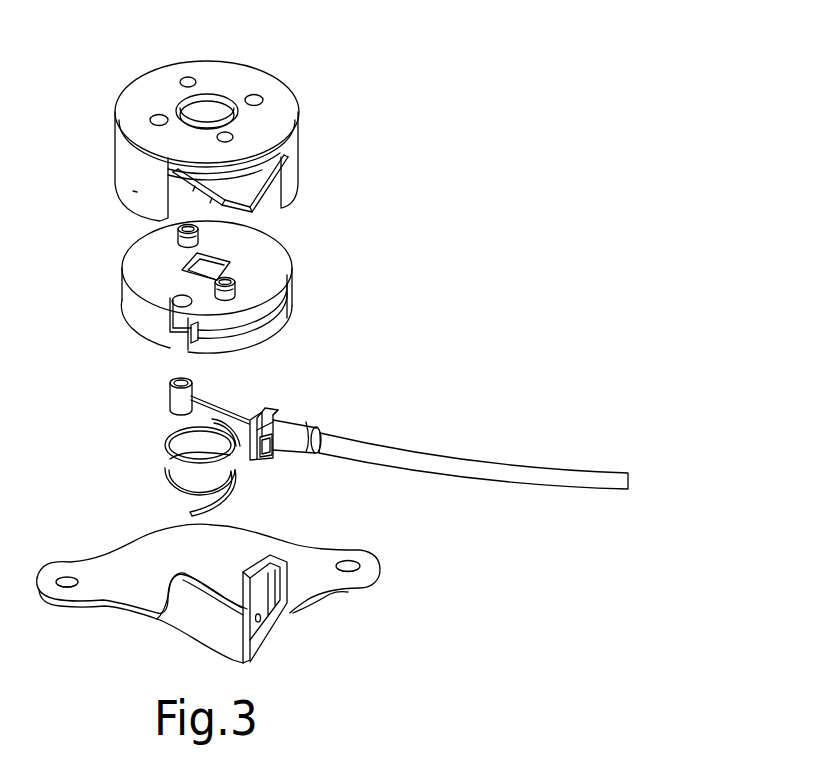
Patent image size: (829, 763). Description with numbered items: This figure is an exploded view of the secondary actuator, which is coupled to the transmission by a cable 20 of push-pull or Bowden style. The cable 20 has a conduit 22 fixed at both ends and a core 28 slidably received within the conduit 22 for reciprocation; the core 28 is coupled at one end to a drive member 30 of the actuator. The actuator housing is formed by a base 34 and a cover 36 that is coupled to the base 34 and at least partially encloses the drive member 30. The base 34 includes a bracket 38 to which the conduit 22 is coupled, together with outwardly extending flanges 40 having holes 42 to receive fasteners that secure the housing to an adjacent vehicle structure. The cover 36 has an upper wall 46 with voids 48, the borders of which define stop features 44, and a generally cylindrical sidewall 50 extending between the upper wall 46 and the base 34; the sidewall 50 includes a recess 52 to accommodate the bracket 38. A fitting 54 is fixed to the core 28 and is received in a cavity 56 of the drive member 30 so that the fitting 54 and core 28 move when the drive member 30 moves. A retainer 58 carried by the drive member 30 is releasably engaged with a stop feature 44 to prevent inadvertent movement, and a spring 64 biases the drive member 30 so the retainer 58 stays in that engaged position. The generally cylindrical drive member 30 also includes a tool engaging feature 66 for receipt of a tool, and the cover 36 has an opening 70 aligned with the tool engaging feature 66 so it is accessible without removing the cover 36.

The cable 20 is at (439, 454).
The conduit 22 is at (419, 463).
The core 28 is at (206, 405).
The drive member 30 is at (209, 276).
The base 34 is at (226, 600).
The cover 36 is at (220, 125).
The bracket 38 is at (280, 598).
The flanges 40 is at (226, 580).
The holes 42 is at (67, 578).
The stop features 44 is at (201, 104).
The upper wall 46 is at (143, 90).
The voids 48 is at (183, 80).
The sidewall 50 is at (134, 192).
The recess 52 is at (268, 206).
The fitting 54 is at (171, 391).
The cavity 56 is at (178, 302).
The retainer 58 is at (183, 246).
The spring 64 is at (166, 449).
The tool engaging feature 66 is at (208, 268).
The opening 70 is at (185, 105).